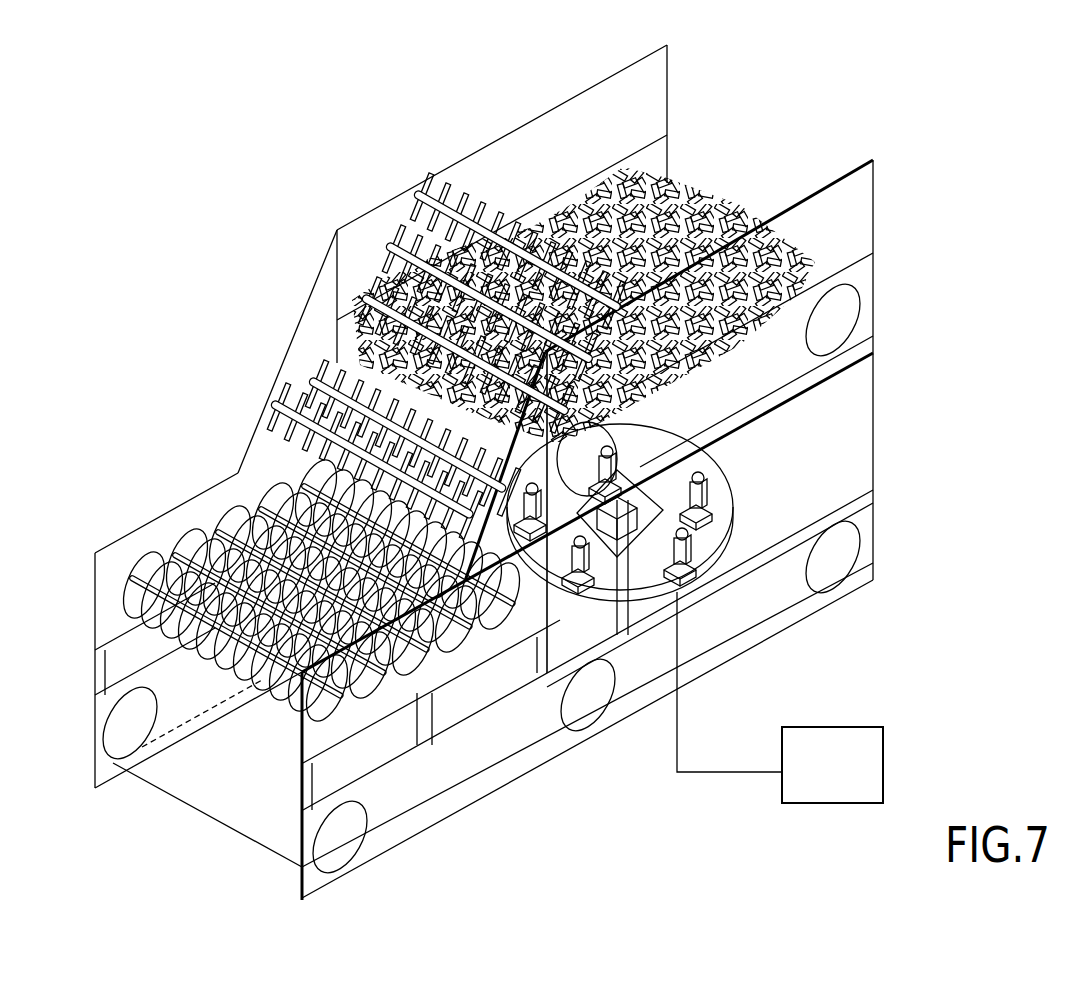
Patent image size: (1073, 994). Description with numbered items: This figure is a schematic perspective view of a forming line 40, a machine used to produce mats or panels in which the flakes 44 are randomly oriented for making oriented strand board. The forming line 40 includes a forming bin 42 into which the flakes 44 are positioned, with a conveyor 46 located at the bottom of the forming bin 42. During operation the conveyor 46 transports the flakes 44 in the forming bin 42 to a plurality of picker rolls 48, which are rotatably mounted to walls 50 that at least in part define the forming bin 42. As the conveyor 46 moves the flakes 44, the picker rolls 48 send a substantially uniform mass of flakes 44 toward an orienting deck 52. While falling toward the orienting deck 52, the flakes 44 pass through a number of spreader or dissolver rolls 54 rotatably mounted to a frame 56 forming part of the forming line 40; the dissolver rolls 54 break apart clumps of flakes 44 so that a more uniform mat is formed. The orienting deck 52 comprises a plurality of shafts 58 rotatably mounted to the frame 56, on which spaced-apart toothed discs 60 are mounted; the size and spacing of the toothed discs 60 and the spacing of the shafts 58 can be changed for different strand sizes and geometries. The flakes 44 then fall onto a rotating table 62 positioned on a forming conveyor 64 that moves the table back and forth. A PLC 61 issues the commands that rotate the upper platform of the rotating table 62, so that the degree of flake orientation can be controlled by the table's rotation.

The forming line 40 is at (348, 180).
The forming bin 42 is at (600, 108).
The flakes 44 is at (700, 190).
The conveyor 46 is at (800, 280).
The picker rolls 48 is at (388, 246).
The walls 50 is at (550, 171).
The orienting deck 52 is at (283, 500).
The dissolver rolls 54 is at (310, 381).
The frame 56 is at (325, 327).
The shafts 58 is at (130, 577).
The toothed discs 60 is at (203, 545).
The PLC 61 is at (860, 727).
The rotating table 62 is at (730, 555).
The forming conveyor 64 is at (222, 757).